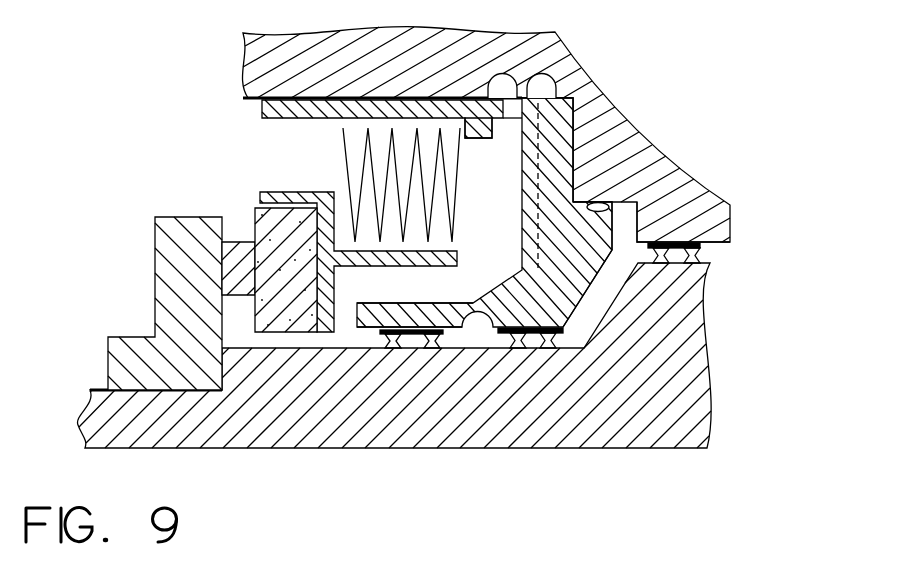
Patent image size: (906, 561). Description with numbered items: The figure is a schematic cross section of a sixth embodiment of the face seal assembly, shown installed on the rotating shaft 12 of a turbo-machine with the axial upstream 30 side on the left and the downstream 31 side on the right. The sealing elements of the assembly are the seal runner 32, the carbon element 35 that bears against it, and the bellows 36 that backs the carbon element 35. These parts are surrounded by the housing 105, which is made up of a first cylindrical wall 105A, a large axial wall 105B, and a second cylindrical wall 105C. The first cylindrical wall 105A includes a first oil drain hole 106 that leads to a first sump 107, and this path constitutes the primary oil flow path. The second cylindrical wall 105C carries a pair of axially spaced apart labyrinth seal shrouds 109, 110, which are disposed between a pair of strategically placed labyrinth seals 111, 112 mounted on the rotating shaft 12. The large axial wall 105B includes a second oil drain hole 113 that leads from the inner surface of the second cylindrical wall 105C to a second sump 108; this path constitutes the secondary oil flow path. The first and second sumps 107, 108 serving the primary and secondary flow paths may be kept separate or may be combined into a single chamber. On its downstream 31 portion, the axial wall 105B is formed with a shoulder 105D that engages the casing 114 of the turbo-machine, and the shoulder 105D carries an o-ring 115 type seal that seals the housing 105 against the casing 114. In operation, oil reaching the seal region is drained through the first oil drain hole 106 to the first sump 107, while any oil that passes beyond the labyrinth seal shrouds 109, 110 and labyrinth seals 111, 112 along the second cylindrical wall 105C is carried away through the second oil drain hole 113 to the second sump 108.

The rotating shaft 12 is at (313, 438).
The upstream 30 is at (71, 290).
The downstream 31 is at (836, 333).
The seal runner 32 is at (168, 244).
The carbon element 35 is at (263, 228).
The bellows 36 is at (340, 187).
The housing 105 is at (660, 321).
The first cylindrical wall 105A is at (322, 110).
The large axial wall 105B is at (560, 153).
The second cylindrical wall 105C is at (372, 343).
The shoulder 105D is at (665, 300).
The first oil drain hole 106 is at (503, 120).
The first sump 107 is at (497, 72).
The second sump 108 is at (566, 82).
The labyrinth seal shroud 109 is at (406, 338).
The labyrinth seal shroud 110 is at (512, 349).
The labyrinth seal 111 is at (381, 354).
The labyrinth seal 112 is at (513, 362).
The second oil drain hole 113 is at (575, 322).
The casing 114 is at (697, 222).
The o-ring 115 is at (608, 193).